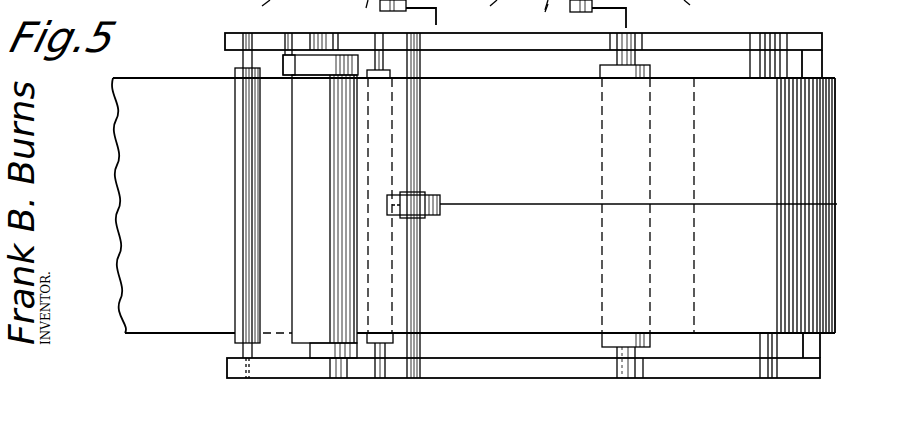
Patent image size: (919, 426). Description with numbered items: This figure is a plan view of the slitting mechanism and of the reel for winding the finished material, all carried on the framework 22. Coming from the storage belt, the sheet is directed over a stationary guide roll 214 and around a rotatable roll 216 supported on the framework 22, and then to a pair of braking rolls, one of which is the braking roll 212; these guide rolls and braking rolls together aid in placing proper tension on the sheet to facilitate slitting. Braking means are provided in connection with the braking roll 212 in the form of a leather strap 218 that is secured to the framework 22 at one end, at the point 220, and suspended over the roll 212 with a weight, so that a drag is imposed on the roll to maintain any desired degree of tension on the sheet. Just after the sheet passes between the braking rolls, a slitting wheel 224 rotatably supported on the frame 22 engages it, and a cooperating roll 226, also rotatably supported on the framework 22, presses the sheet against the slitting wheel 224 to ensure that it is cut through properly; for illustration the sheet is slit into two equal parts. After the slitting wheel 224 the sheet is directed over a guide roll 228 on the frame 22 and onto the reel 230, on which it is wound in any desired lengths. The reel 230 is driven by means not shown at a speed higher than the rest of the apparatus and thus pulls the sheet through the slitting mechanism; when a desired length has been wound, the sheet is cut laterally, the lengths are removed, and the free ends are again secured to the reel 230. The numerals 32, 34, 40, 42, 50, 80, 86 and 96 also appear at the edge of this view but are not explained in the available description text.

The framework 22 is at (810, 40).
The frame member 32 is at (698, 8).
The frame member 34 is at (249, 9).
The bracket 40 is at (526, 11).
The bracket arm 42 is at (550, 17).
The guide bracket 50 is at (632, 16).
The shaft 80 is at (476, 14).
The support 86 is at (358, 14).
The guide bracket 96 is at (408, 13).
The braking roll 212 is at (300, 263).
The stationary guide roll 214 is at (243, 220).
The rotatable roll 216 is at (405, 72).
The leather strap 218 is at (320, 63).
The strap securing point 220 is at (283, 55).
The slitting wheel 224 is at (426, 218).
The roll 226 is at (430, 197).
The guide roll 228 is at (608, 170).
The reel 230 is at (782, 345).